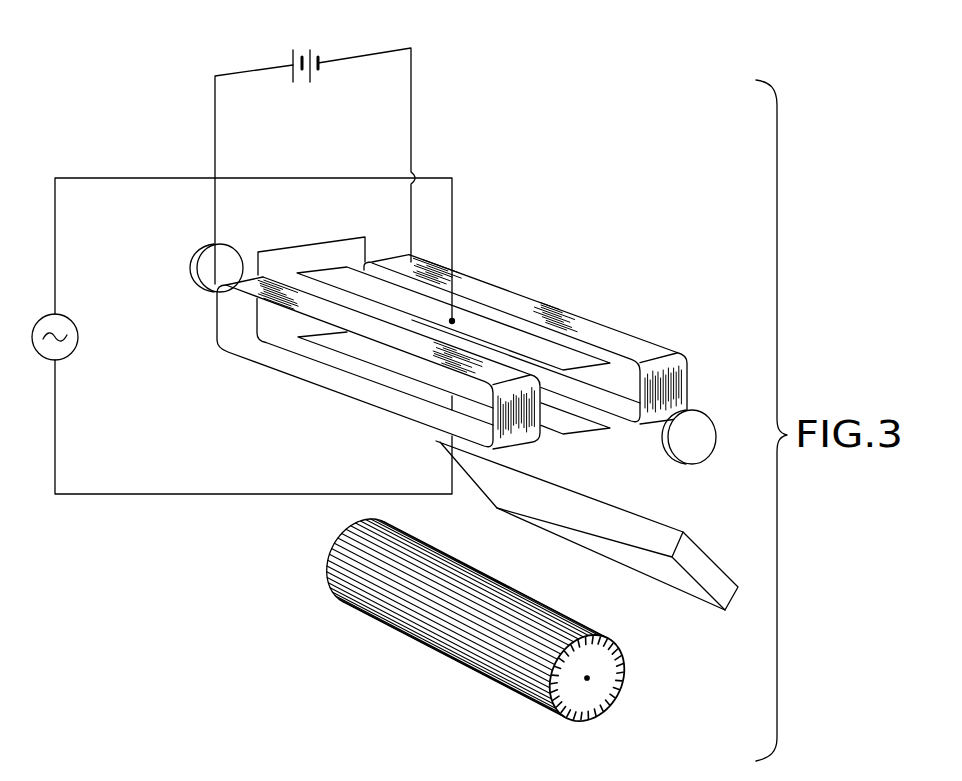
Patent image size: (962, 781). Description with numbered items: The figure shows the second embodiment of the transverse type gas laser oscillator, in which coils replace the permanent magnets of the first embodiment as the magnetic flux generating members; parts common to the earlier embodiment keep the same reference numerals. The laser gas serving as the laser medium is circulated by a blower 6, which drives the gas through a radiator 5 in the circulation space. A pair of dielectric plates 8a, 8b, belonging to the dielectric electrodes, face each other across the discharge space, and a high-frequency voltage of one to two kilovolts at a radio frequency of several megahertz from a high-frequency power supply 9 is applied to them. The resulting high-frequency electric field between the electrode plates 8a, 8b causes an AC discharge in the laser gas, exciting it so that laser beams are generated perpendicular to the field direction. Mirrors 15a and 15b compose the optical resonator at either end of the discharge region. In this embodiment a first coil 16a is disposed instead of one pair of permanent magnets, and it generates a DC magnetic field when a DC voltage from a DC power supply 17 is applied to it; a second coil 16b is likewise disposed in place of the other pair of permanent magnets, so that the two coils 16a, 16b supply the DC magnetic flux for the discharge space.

The radiator 5 is at (612, 551).
The blower 6 is at (457, 663).
The electrode plate 8a is at (533, 348).
The electrode plate 8b is at (577, 428).
The high-frequency power supply 9 is at (80, 337).
The mirror 15a is at (703, 443).
The mirror 15b is at (198, 263).
The first coil 16a is at (297, 371).
The second coil 16b is at (613, 333).
The DC power supply 17 is at (306, 45).